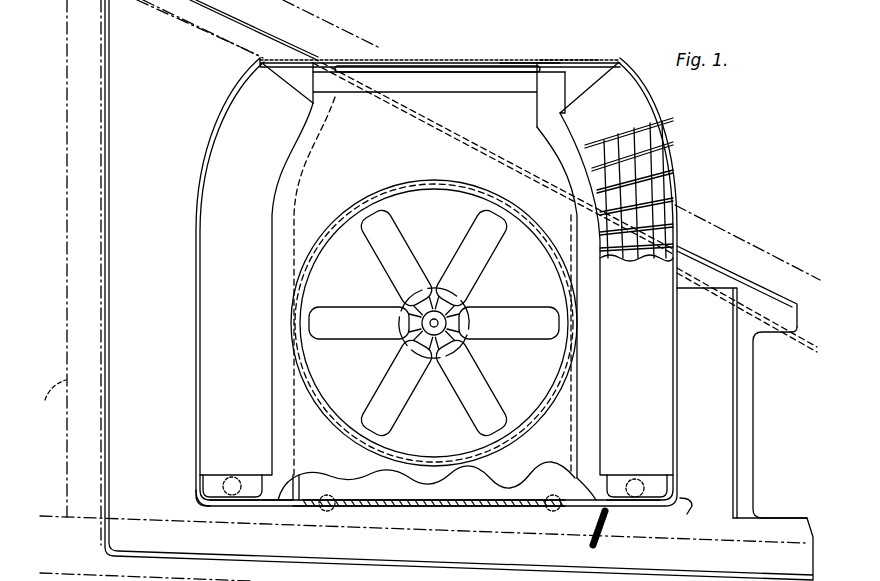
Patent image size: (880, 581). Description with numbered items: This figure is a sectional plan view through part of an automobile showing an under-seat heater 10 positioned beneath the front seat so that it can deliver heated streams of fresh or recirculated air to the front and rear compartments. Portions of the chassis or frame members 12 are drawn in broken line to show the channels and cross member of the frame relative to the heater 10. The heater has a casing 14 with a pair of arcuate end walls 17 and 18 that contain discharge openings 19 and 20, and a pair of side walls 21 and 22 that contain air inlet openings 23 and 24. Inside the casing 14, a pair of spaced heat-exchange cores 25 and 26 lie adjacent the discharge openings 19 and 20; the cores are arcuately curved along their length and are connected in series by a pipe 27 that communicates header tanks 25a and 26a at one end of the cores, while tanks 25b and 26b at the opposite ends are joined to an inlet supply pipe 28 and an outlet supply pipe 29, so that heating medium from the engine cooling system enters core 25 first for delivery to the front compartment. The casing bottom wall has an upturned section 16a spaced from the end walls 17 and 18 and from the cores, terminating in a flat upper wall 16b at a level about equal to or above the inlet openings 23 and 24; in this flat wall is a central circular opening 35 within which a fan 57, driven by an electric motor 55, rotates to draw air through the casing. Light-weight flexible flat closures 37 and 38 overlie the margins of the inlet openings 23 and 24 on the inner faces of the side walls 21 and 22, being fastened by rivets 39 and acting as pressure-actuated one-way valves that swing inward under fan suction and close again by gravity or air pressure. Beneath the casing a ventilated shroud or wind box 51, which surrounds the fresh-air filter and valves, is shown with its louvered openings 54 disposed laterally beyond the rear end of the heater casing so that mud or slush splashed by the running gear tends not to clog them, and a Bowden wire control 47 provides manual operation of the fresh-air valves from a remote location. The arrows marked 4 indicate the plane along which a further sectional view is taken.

The section line 4- 4 is at (225, 462).
The heater 10 is at (652, 105).
The chassis or frame members 12 is at (314, 8).
The casing 14 is at (573, 54).
The upturned section 16a is at (300, 482).
The flat upper wall 16b is at (360, 463).
The arcuate end wall 17 is at (198, 494).
The arcuate end wall 18 is at (688, 514).
The discharge opening 19 is at (196, 193).
The discharge opening 20 is at (675, 185).
The side wall 21 is at (264, 507).
The side wall 22 is at (465, 63).
The air inlet opening 23 is at (303, 508).
The air inlet opening 24 is at (534, 60).
The heat-exchange core 25 is at (272, 400).
The header tank 25a is at (285, 70).
The tank 25b is at (258, 484).
The heat-exchange core 26 is at (600, 380).
The header tank 26a is at (580, 73).
The tank 26b is at (632, 468).
The pipe 27 is at (481, 93).
The inlet supply pipe 28 is at (216, 505).
The outlet supply pipe 29 is at (620, 508).
The central circular opening 35 is at (345, 222).
The flexible flat closure 37 is at (453, 503).
The flexible flat closure 38 is at (412, 64).
The rivets 39 is at (337, 512).
The Bowden wire control 47 is at (596, 530).
The shroud or wind-box 51 is at (118, 324).
The louvered openings 54 is at (758, 426).
The electric motor 55 is at (437, 368).
The fan 57 is at (352, 307).